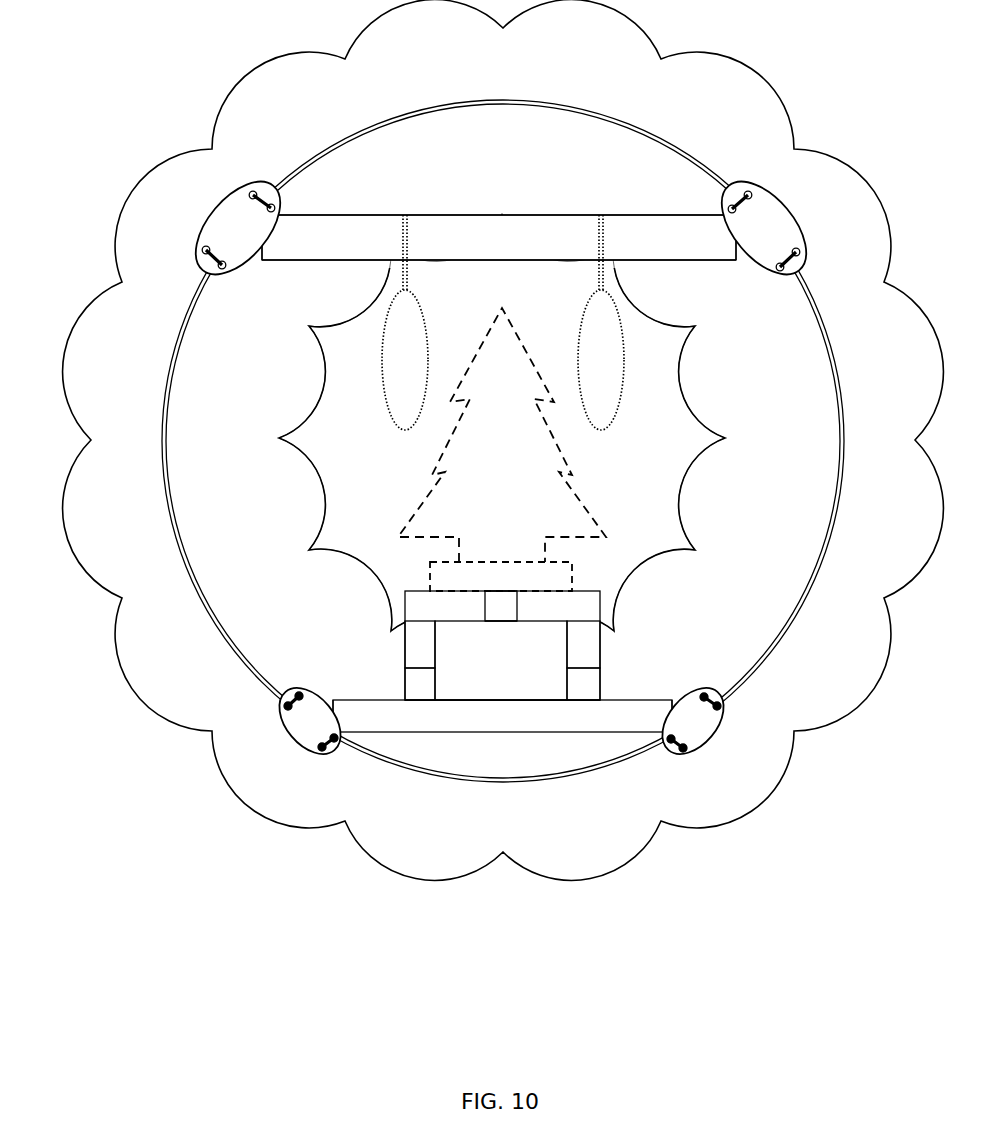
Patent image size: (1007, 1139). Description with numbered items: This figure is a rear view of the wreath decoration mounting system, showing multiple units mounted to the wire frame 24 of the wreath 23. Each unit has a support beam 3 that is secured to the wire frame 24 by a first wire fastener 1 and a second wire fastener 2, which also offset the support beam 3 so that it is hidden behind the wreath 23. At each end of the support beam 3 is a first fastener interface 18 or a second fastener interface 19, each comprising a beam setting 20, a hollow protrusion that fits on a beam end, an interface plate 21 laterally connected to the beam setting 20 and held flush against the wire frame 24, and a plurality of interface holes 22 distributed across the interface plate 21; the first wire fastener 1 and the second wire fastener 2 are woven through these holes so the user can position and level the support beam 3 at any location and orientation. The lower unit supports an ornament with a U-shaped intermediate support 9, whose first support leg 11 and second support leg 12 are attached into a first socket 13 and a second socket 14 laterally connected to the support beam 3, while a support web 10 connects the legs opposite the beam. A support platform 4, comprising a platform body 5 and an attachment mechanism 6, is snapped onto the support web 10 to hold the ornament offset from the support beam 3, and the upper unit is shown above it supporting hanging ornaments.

The first wire fastener 1 is at (722, 212).
The second wire fastener 2 is at (288, 216).
The support beam 3 is at (372, 238).
The support platform 4 is at (583, 585).
The platform body 5 is at (497, 588).
The attachment mechanism 6 is at (505, 598).
The U-shaped intermediate support 9 is at (632, 621).
The support web 10 is at (430, 598).
The first support leg 11 is at (416, 648).
The second support leg 12 is at (592, 645).
The first socket 13 is at (428, 694).
The second socket 14 is at (574, 694).
The first fastener interface 18 is at (842, 270).
The second fastener interface 19 is at (164, 266).
The beam setting 20 is at (266, 262).
The interface plate 21 is at (225, 226).
The plurality of interface holes 22 is at (257, 193).
The wreath 23 is at (103, 565).
The wire frame 24 is at (162, 446).